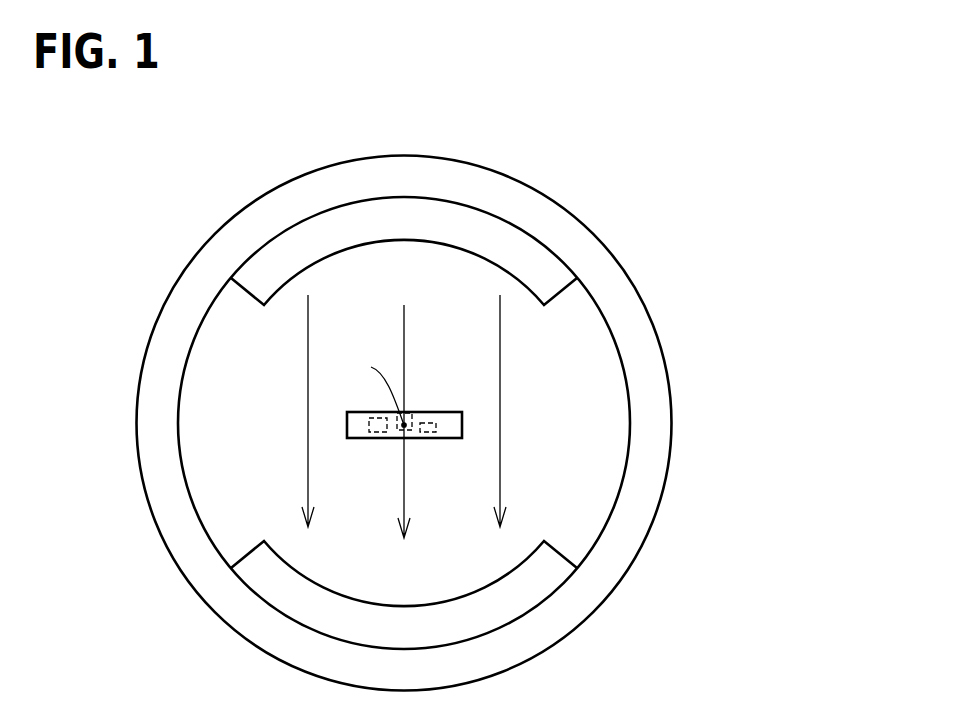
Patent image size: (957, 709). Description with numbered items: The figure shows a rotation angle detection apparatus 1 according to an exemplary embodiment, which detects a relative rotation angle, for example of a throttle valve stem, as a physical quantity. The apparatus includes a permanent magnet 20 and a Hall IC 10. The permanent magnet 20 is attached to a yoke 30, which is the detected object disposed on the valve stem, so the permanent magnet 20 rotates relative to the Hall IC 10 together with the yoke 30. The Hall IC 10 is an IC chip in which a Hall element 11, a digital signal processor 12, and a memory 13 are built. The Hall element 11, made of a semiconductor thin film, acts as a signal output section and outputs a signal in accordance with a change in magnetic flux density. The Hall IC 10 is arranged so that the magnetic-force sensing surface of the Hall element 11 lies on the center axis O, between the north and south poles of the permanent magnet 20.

The rotation angle detection apparatus 1 is at (441, 423).
The Hall IC 10 is at (444, 431).
The Hall element 11 is at (434, 384).
The digital signal processor 12 is at (356, 464).
The memory 13 is at (453, 467).
The permanent magnet 20 is at (406, 423).
The yoke 30 is at (406, 423).